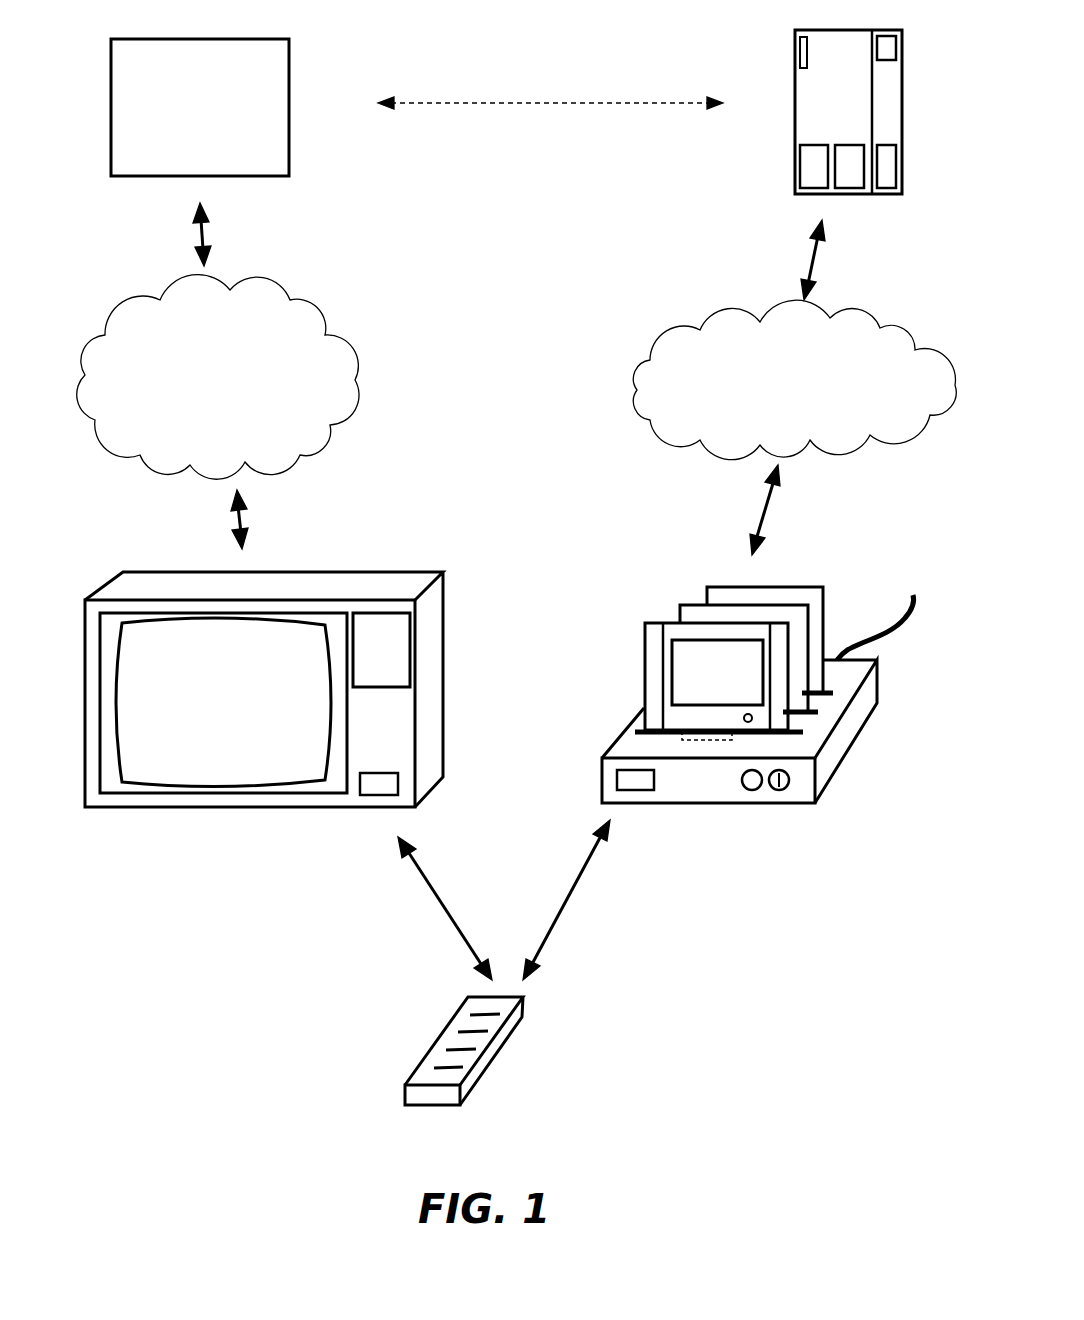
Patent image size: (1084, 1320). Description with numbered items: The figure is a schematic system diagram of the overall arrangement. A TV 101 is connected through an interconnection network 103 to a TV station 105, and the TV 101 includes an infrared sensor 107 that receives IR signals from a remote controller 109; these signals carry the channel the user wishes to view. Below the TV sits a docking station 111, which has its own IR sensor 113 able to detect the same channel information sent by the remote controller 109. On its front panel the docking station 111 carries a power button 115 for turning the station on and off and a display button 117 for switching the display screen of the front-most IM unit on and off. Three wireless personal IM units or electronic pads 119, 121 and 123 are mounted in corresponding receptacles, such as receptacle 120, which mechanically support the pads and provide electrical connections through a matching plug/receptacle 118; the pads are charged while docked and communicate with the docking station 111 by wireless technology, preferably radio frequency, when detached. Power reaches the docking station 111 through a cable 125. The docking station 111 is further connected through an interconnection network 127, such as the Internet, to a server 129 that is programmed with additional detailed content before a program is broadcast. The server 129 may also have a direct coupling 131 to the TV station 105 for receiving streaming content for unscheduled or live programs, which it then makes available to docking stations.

The TV 101 is at (264, 688).
The interconnection network 103 is at (352, 378).
The TV station 105 is at (289, 107).
The infrared (IR) sensor 107 is at (378, 784).
The remote controller 109 is at (505, 1047).
The docking station 111 is at (730, 718).
The IR sensor 113 is at (636, 782).
The power button 115 is at (780, 790).
The display button 117 is at (752, 790).
The matching plug/receptacle 118 is at (706, 741).
The personal IM unit 119 is at (645, 680).
The receptacle 120 is at (658, 734).
The personal IM unit 121 is at (680, 605).
The personal IM unit 123 is at (708, 587).
The cable 125 is at (887, 626).
The interconnection network 127 is at (648, 380).
The server 129 is at (795, 113).
The direct coupling 131 is at (504, 104).